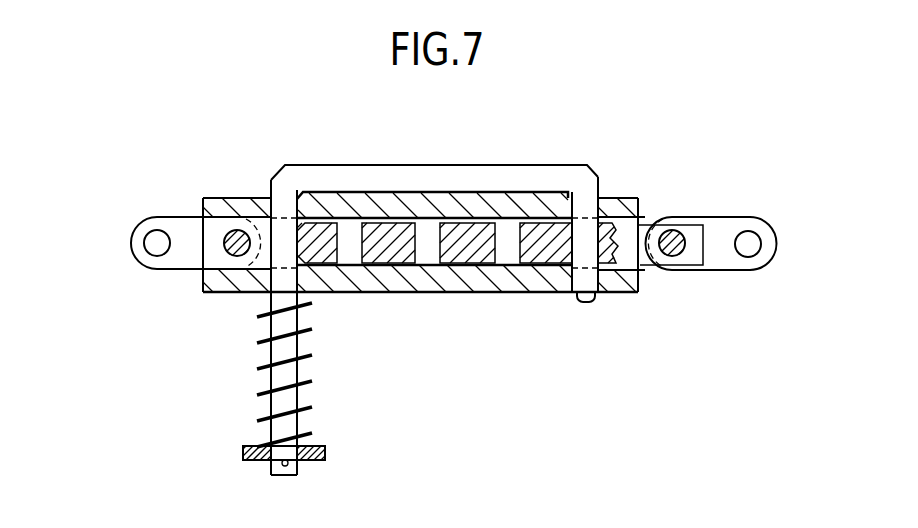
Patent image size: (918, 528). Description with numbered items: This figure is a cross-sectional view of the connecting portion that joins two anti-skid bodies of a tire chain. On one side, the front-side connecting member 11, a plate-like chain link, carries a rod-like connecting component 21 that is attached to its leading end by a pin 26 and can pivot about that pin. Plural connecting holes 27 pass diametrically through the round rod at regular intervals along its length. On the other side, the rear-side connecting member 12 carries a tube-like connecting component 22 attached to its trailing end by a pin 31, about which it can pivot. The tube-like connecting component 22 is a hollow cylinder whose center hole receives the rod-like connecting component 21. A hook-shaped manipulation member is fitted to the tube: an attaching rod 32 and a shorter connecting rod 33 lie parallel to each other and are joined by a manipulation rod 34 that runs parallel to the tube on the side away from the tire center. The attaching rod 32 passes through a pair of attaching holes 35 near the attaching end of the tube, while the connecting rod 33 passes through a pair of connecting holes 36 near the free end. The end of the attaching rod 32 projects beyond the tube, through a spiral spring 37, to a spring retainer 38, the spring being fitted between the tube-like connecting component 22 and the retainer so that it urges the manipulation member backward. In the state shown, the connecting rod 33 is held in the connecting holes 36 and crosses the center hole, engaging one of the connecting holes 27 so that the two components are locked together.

The front-side connecting member 11 is at (762, 217).
The rear-side connecting member 12 is at (151, 216).
The rod-like connecting component 21 is at (645, 216).
The tube-like connecting component 22 is at (455, 292).
The pin 26 is at (676, 228).
The connecting holes 27 is at (457, 320).
The pin 31 is at (237, 230).
The attaching rod 32 is at (270, 433).
The connecting rod 33 is at (586, 302).
The manipulation rod 34 is at (420, 165).
The attaching holes 35 is at (274, 198).
The connecting holes 36 is at (598, 209).
The spiral spring 37 is at (313, 355).
The spring retainer 38 is at (325, 453).